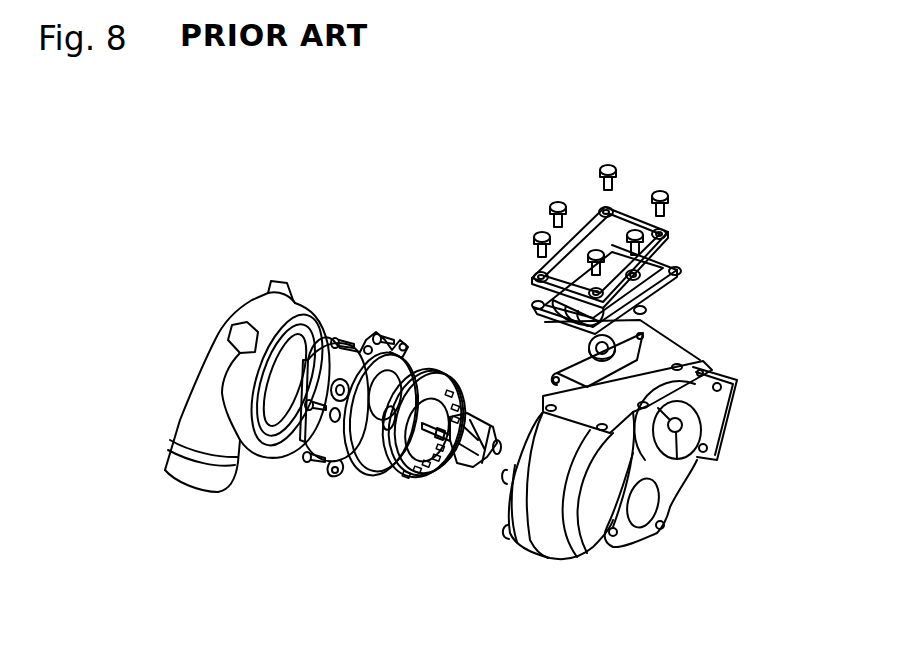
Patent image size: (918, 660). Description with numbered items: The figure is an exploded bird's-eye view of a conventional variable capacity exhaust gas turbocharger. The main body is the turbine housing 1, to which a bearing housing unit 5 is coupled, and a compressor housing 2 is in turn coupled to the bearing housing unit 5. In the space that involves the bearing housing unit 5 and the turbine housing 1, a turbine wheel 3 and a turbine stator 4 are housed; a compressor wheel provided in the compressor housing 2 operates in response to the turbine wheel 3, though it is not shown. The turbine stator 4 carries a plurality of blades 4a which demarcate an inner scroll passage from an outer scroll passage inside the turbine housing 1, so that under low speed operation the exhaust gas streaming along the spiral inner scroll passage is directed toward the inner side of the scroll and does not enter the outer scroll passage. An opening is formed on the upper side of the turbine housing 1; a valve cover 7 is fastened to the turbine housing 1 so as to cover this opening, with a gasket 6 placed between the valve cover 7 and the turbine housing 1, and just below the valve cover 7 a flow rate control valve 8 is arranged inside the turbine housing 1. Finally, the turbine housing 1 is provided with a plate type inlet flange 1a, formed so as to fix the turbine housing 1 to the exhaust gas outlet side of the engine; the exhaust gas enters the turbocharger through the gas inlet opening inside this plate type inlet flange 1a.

The turbine housing 1 is at (540, 537).
The plate type inlet flange 1a is at (718, 400).
The compressor housing 2 is at (235, 378).
The turbine wheel 3 is at (473, 473).
The turbine stator 4 is at (403, 477).
The blades 4a is at (431, 473).
The bearing housing unit 5 is at (367, 495).
The gasket 6 is at (677, 271).
The valve cover 7 is at (618, 242).
The flow rate control valve 8 is at (643, 333).